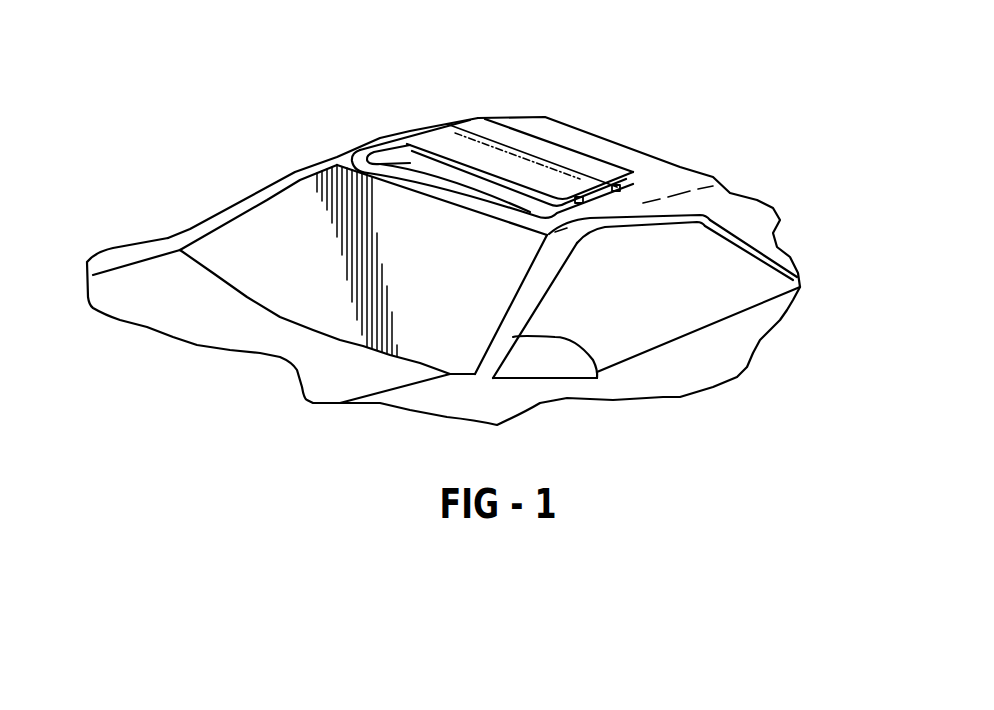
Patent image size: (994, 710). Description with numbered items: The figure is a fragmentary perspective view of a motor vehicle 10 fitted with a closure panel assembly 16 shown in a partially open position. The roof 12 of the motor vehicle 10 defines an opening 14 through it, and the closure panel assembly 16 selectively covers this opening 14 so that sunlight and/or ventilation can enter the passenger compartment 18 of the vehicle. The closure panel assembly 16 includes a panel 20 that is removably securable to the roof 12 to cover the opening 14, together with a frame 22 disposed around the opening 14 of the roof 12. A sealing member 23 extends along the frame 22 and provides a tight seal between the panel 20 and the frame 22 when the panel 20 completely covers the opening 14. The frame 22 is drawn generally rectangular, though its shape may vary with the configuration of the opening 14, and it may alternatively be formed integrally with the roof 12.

The motor vehicle 10 is at (237, 203).
The roof 12 is at (520, 115).
The opening 14 is at (486, 184).
The closure panel assembly 16 is at (567, 136).
The passenger compartment 18 is at (712, 274).
The panel 20 is at (612, 157).
The frame 22 is at (382, 149).
The sealing member 23 is at (362, 163).